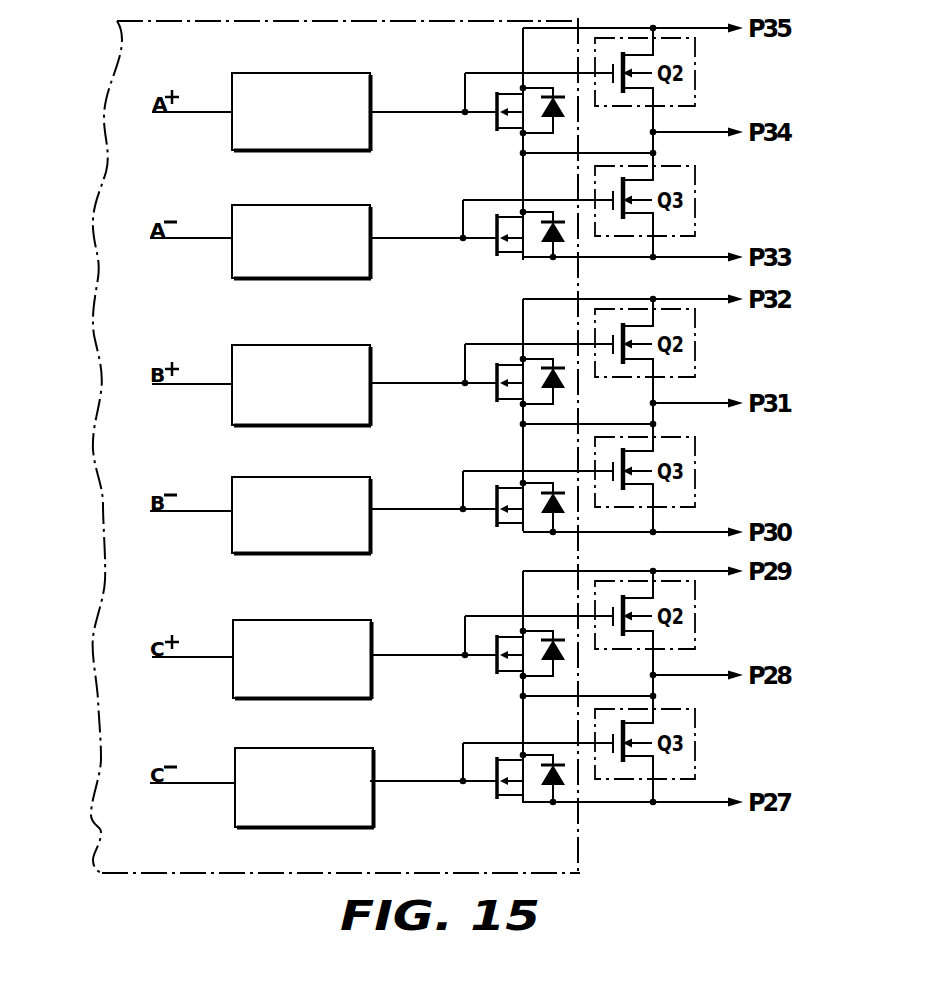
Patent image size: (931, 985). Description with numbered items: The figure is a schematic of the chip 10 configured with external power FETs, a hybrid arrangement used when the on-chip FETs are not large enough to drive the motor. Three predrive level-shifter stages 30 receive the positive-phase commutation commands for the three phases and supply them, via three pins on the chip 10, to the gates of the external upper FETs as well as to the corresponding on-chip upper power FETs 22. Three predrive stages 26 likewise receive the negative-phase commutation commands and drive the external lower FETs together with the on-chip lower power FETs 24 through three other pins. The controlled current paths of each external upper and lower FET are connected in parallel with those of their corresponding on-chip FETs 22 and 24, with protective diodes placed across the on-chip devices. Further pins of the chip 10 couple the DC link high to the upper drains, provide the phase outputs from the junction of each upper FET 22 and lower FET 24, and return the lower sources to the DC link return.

The chip 10 is at (90, 85).
The upper power FET 22 is at (497, 131).
The lower power FET 24 is at (497, 256).
The predrive stage 26 is at (352, 205).
The predrive level-shifter stage 30 is at (354, 73).